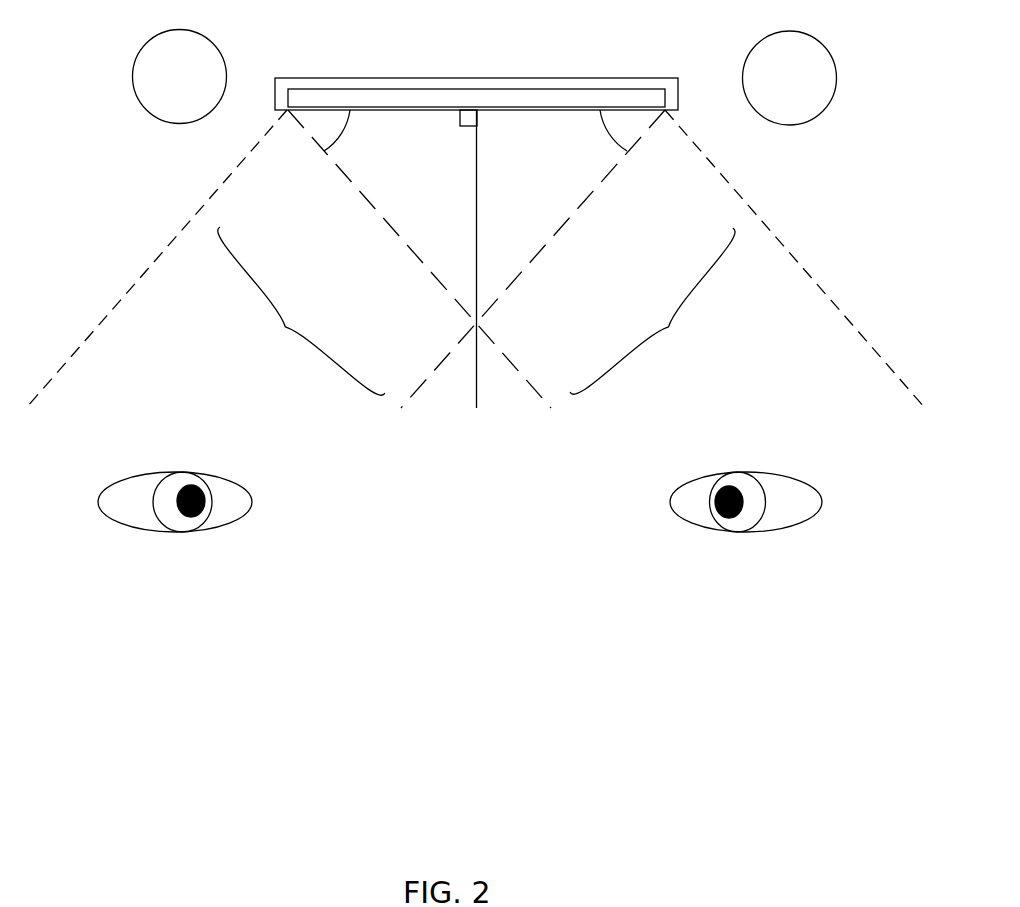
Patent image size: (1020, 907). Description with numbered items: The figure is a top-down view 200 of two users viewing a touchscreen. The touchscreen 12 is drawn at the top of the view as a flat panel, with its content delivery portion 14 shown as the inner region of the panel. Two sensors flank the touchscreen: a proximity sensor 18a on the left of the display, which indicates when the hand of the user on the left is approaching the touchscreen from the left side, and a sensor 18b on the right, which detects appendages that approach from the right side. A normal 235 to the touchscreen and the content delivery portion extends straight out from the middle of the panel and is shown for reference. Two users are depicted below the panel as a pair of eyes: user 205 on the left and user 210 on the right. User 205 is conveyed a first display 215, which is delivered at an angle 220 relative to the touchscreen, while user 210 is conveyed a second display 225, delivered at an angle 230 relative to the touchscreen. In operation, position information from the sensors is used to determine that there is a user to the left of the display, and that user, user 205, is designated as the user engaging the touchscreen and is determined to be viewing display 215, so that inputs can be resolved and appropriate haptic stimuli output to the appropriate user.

The proximity sensor 18a is at (220, 52).
The sensor 18b is at (830, 53).
The touchscreen 12 is at (540, 78).
The content delivery portion 14 is at (382, 95).
The normal 235 is at (477, 173).
The angle 230 is at (338, 125).
The angle 220 is at (613, 125).
The first display 215 is at (294, 318).
The second display 225 is at (660, 318).
The user 205 is at (175, 522).
The user 210 is at (746, 522).
The top-down view 200 is at (146, 680).